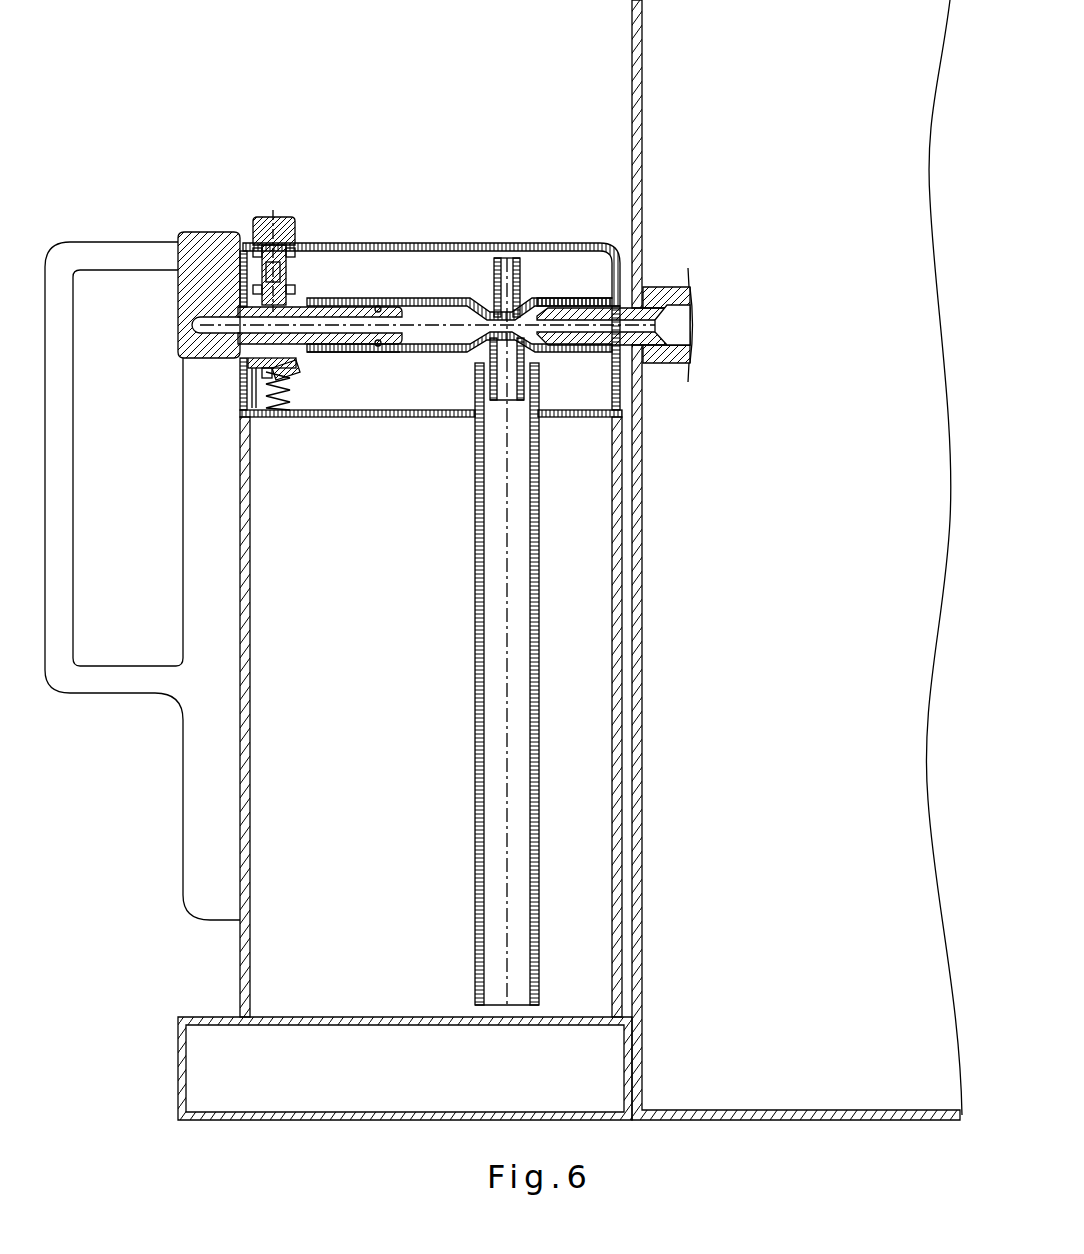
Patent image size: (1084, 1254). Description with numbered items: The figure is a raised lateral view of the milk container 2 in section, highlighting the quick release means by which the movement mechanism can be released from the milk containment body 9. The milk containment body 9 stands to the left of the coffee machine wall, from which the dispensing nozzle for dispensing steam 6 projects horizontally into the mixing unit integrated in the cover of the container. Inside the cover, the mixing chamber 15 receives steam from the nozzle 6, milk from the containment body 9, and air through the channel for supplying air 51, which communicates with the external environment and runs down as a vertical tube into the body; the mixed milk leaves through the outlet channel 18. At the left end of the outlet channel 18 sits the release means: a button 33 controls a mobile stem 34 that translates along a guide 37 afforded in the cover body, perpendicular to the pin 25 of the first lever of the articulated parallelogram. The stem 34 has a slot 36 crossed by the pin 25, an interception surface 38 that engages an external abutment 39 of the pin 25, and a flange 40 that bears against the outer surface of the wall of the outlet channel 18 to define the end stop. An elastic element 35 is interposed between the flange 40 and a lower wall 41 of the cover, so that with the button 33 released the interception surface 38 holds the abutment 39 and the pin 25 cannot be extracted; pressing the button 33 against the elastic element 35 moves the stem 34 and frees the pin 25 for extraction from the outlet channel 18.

The milk container 2 is at (152, 876).
The dispensing nozzle for dispensing steam 6 is at (572, 356).
The milk containment body 9 is at (596, 599).
The mixing chamber 15 is at (453, 300).
The outlet channel 18 is at (425, 298).
The pin 25 is at (350, 356).
The button 33 is at (279, 217).
The mobile stem 34 is at (312, 268).
The elastic element 35 is at (286, 398).
The slot 36 is at (272, 283).
The guide 37 is at (242, 277).
The interception surface 38 is at (238, 362).
The external abutment 39 is at (300, 374).
The flange 40 is at (250, 378).
The lower wall 41 is at (250, 412).
The channel for supplying air 51 is at (508, 260).